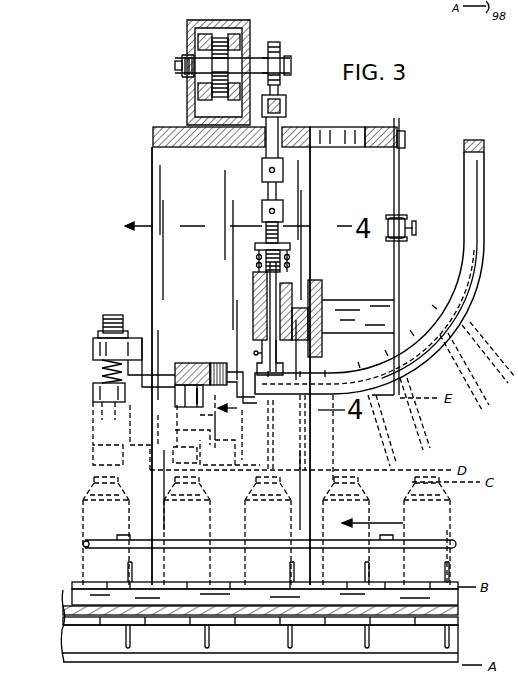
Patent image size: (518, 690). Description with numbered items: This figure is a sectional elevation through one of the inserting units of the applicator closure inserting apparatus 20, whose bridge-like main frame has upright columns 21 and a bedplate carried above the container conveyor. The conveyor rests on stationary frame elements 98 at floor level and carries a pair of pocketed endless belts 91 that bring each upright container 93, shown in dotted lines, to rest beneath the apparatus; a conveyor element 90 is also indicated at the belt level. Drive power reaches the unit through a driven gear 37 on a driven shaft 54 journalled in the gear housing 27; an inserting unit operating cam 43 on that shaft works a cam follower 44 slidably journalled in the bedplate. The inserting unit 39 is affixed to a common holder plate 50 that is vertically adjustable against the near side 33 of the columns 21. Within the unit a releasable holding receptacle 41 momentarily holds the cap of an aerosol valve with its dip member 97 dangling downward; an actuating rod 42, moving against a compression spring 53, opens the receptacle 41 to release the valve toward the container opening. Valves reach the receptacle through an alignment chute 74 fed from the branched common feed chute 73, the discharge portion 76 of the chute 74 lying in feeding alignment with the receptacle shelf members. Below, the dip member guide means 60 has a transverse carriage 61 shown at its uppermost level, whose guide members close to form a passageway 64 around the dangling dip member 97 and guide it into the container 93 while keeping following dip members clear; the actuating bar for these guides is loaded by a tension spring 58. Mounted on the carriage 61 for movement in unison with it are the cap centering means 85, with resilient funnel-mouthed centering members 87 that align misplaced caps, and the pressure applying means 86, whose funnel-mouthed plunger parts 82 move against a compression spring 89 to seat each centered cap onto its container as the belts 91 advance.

The applicator closure inserting apparatus 20 is at (386, 128).
The upright column 21 is at (152, 178).
The gear housing 27 is at (240, 22).
The near side of column 33 is at (310, 172).
The driven gear 37 is at (228, 24).
The inserting unit 39 is at (257, 260).
The releasable holding receptacle 41 is at (273, 366).
The actuating rod 42 is at (264, 232).
The inserting unit operating cam 43 is at (280, 48).
The cam follower 44 is at (286, 114).
The holder plate 50 is at (322, 290).
The compression spring 53 is at (290, 259).
The driven shaft 54 is at (286, 66).
The tension spring 58 is at (400, 212).
The dip member guide means 60 is at (226, 362).
The transverse carriage 61 is at (192, 363).
The passageway 64 is at (254, 354).
The common feed chute 73 is at (481, 139).
The alignment chute 74 is at (458, 275).
The discharge portion 76 is at (290, 400).
The plunger part 82 is at (112, 314).
The cap centering means 85 is at (175, 393).
The pressure applying means 86 is at (94, 338).
The centering member 87 is at (200, 395).
The compression spring 89 is at (102, 368).
The pin 90 is at (367, 571).
The endless belt 91 is at (455, 571).
The container 93 is at (447, 530).
The dip member 97 is at (478, 346).
The stationary frame element 98 is at (427, 655).